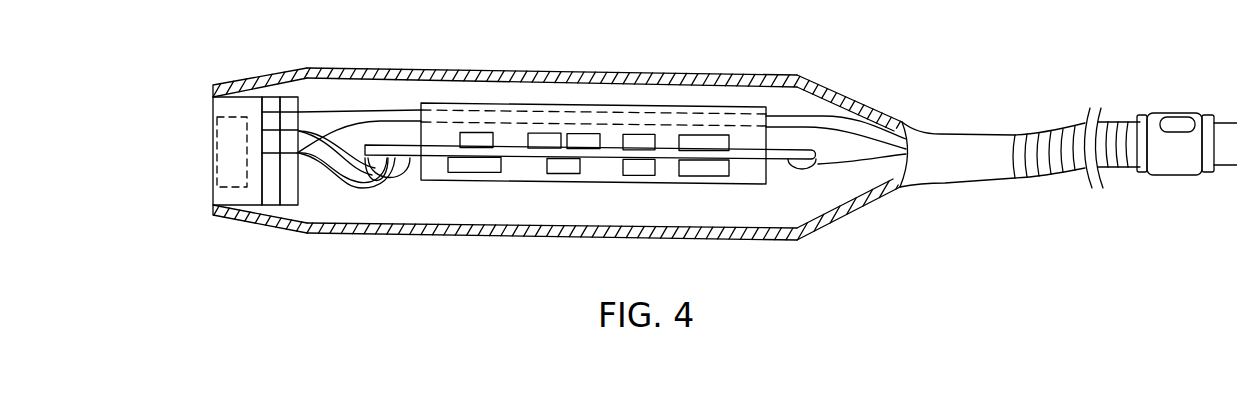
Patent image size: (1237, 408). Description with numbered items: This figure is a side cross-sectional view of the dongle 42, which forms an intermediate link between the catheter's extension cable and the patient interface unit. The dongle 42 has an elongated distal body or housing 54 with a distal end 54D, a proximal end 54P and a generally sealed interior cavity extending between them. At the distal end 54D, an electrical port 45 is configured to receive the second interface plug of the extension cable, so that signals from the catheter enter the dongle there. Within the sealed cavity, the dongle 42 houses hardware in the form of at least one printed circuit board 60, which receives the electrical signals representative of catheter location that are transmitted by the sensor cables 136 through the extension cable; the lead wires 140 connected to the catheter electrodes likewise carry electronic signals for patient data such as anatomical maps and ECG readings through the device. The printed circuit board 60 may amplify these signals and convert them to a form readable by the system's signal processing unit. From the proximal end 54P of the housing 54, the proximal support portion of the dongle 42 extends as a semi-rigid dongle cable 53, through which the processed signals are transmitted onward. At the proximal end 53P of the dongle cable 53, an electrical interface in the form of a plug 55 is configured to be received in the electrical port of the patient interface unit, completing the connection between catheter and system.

The dongle 42 is at (524, 33).
The electrical port 45 is at (220, 157).
The dongle cable 53 is at (1058, 122).
The proximal end of the dongle cable 53P is at (1128, 173).
The housing 54 is at (708, 74).
The distal end of the housing 54D is at (245, 79).
The proximal end of the housing 54P is at (911, 124).
The plug 55 is at (1204, 113).
The printed circuit board 60 is at (608, 176).
The sensor cables 136 is at (851, 158).
The lead wires 140 is at (813, 127).